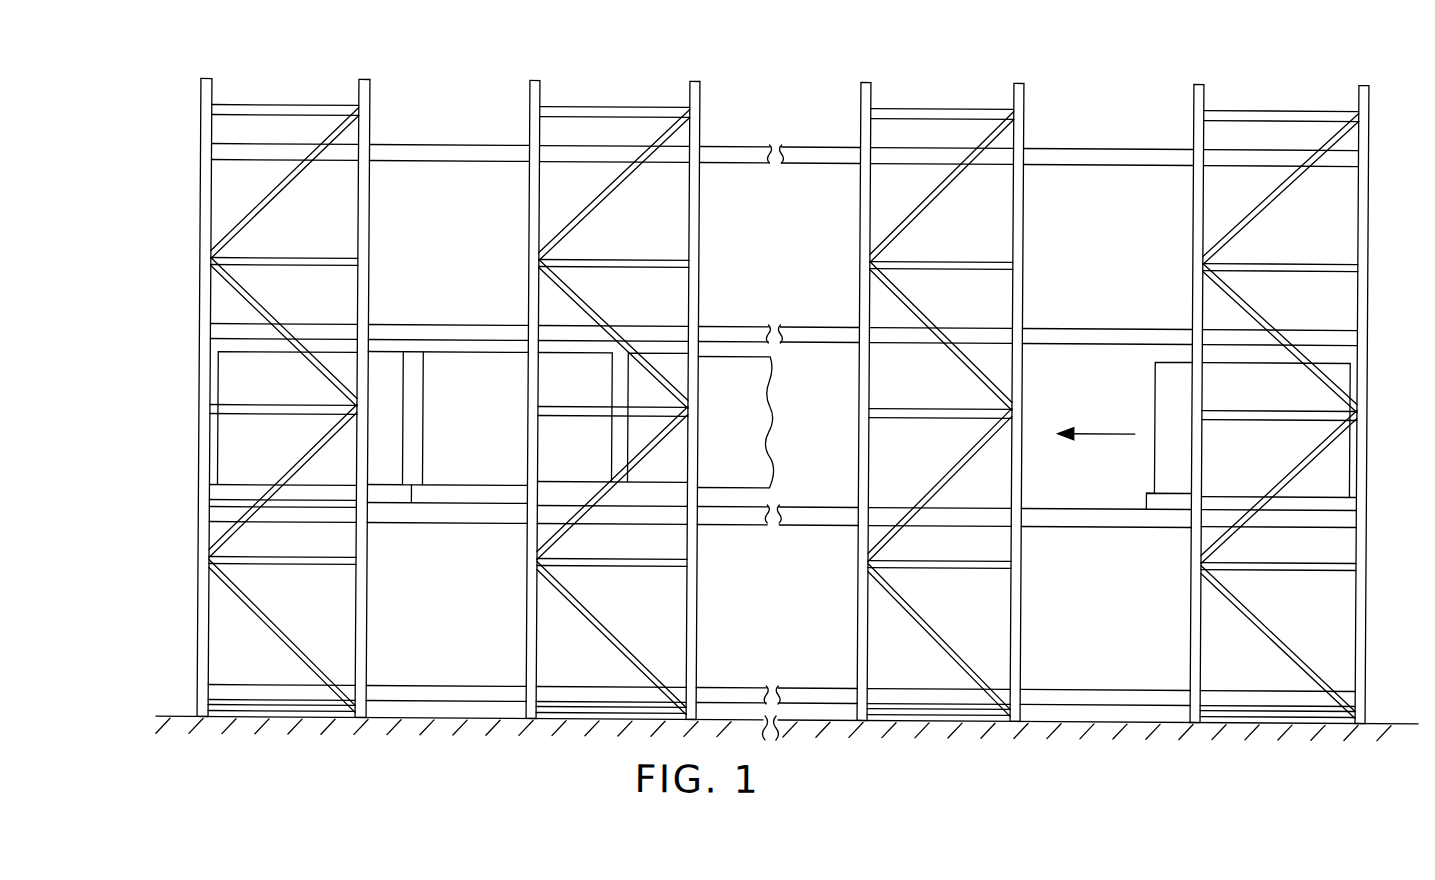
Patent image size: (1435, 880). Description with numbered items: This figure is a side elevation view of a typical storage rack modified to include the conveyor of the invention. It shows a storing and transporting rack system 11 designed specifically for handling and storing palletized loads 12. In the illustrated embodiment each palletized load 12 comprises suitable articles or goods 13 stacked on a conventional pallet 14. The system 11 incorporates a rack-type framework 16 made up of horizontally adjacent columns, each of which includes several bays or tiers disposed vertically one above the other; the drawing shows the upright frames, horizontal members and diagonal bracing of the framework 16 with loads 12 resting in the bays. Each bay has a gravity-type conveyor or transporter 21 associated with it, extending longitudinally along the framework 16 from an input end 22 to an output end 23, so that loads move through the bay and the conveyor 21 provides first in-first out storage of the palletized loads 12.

The storing and transporting rack system 11 is at (522, 75).
The palletized load 12 is at (436, 353).
The articles or goods 13 is at (490, 367).
The pallet 14 is at (488, 499).
The rack-type framework 16 is at (1362, 222).
The gravity-type conveyor 21 is at (1093, 528).
The input end 22 is at (1370, 415).
The output end 23 is at (200, 424).